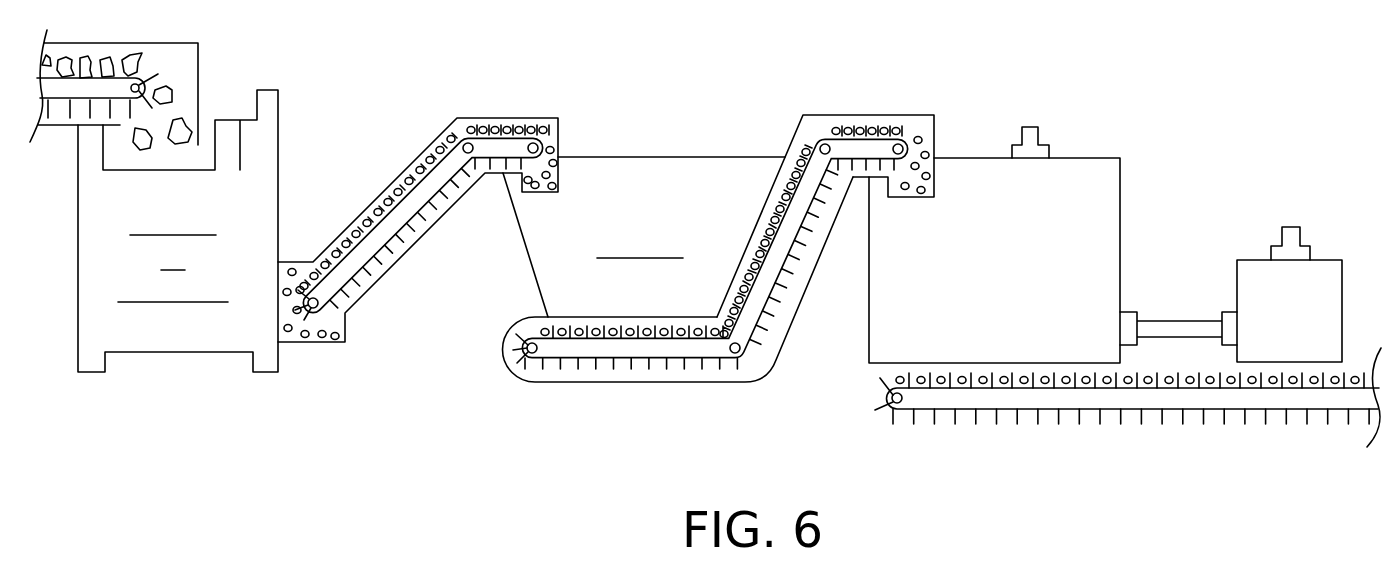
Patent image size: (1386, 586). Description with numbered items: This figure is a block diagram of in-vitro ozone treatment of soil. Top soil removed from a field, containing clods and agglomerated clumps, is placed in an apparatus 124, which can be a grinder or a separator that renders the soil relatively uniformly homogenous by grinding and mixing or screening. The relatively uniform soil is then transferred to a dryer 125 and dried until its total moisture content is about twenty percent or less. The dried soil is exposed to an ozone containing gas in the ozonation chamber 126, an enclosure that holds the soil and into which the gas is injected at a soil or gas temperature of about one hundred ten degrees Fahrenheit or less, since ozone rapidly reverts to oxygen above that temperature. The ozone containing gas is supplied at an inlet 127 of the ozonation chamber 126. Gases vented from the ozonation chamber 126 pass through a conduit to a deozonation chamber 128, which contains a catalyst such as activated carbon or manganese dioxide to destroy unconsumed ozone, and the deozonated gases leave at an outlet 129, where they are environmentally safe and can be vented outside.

The apparatus 124 is at (95, 253).
The dryer 125 is at (618, 168).
The ozonation chamber 126 is at (973, 168).
The inlet 127 is at (1030, 123).
The deozonation chamber 128 is at (1255, 268).
The outlet 129 is at (1292, 223).